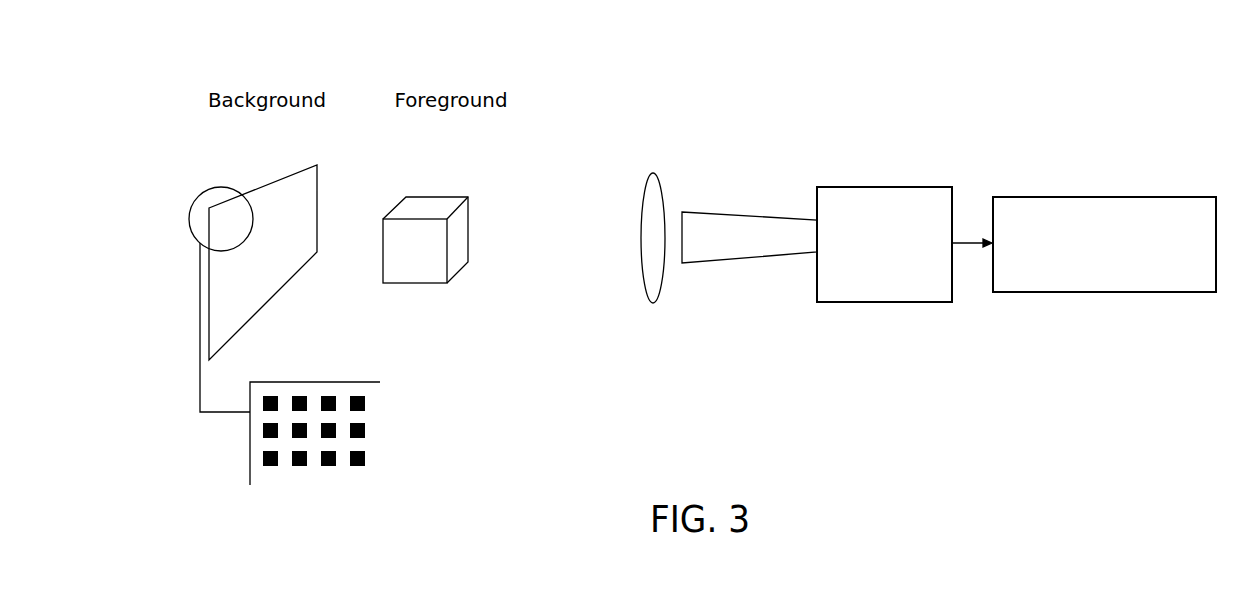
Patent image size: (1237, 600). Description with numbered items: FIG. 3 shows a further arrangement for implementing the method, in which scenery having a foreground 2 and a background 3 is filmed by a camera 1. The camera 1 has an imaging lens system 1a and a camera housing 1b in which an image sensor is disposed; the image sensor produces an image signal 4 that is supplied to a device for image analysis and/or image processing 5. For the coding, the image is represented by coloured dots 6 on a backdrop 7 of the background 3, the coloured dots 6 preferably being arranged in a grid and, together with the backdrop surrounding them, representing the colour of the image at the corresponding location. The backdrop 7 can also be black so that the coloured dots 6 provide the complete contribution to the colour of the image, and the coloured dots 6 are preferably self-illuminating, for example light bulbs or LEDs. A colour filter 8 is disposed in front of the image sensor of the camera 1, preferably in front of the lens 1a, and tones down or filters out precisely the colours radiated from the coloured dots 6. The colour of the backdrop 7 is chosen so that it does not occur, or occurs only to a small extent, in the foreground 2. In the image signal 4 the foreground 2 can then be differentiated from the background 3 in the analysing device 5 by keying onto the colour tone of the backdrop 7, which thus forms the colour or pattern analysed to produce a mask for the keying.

The camera 1 is at (921, 187).
The imaging lens system 1a is at (752, 218).
The camera housing 1b is at (848, 187).
The foreground 2 is at (435, 197).
The background 3 is at (317, 191).
The image signal 4 is at (968, 240).
The device for image analysis and/or image processing 5 is at (1104, 197).
The coloured dots 6 is at (366, 432).
The backdrop 7 is at (370, 446).
The colour filter 8 is at (653, 173).